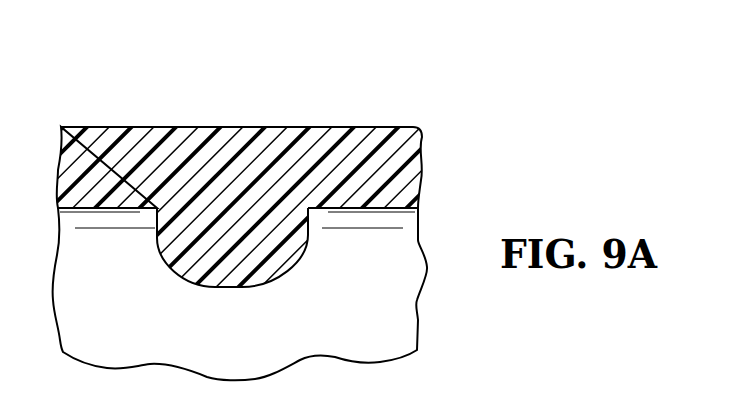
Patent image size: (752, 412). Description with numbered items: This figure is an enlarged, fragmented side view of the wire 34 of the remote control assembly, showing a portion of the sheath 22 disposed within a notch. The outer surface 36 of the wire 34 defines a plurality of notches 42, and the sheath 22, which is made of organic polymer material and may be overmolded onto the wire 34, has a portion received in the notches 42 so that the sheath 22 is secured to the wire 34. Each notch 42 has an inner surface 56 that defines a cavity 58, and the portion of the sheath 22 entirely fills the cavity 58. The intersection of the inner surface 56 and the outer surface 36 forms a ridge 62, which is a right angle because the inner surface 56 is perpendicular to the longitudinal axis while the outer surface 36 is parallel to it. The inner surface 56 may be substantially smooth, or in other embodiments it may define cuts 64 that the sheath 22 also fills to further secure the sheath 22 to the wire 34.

The sheath 22 is at (412, 147).
The wire 34 is at (418, 320).
The outer surface 36 is at (390, 207).
The notches 42 is at (296, 174).
The inner surface 56 is at (178, 243).
The cavity 58 is at (205, 282).
The ridge 62 is at (158, 205).
The cuts 64 is at (258, 282).